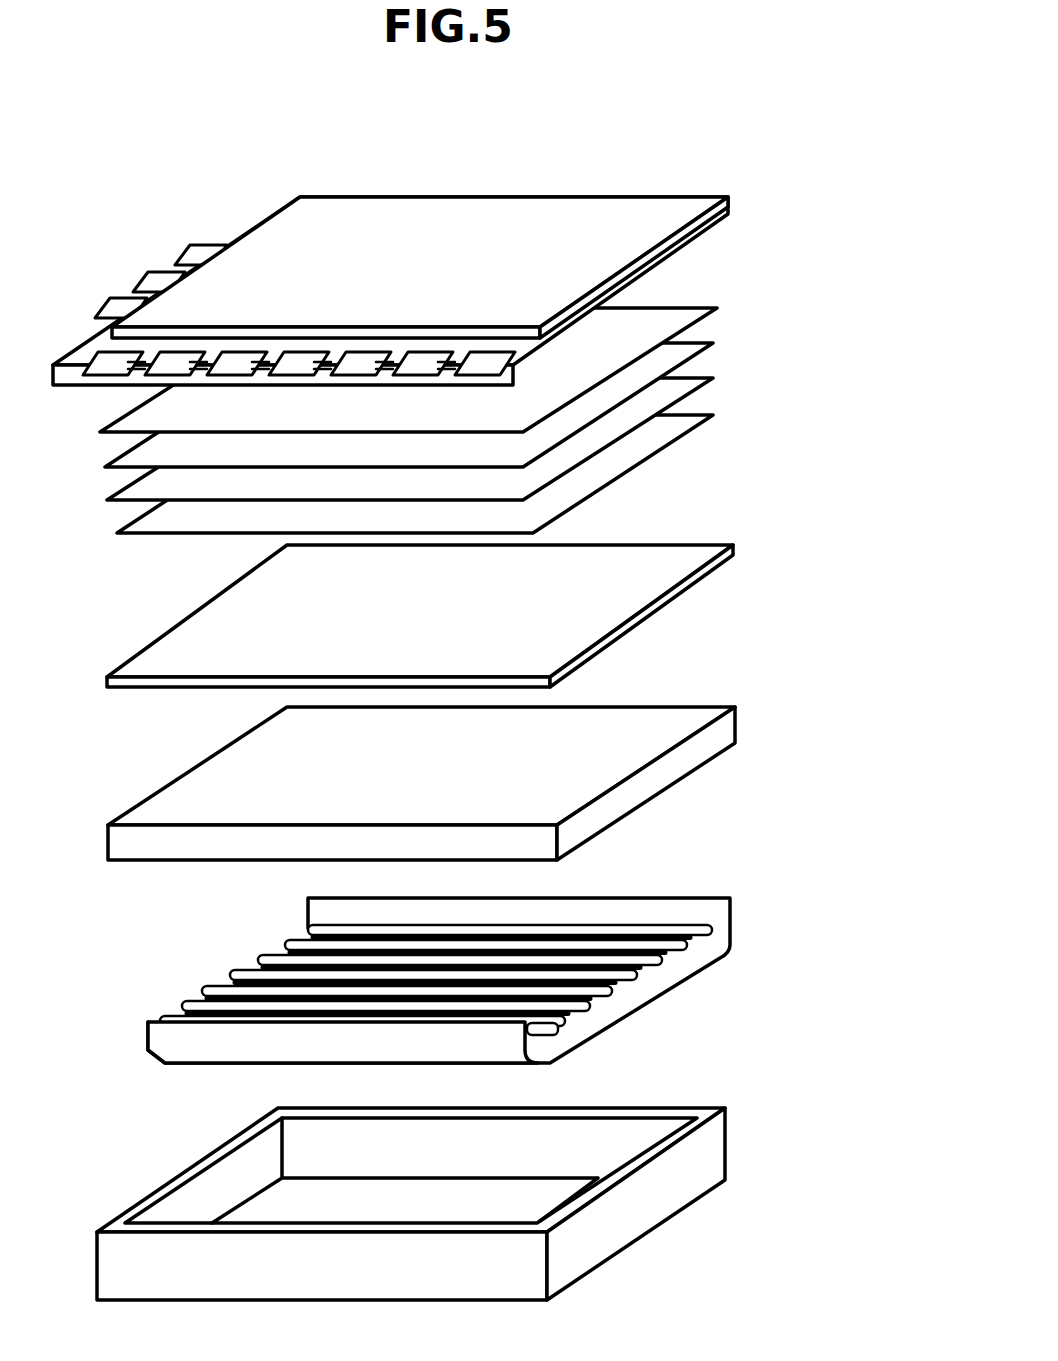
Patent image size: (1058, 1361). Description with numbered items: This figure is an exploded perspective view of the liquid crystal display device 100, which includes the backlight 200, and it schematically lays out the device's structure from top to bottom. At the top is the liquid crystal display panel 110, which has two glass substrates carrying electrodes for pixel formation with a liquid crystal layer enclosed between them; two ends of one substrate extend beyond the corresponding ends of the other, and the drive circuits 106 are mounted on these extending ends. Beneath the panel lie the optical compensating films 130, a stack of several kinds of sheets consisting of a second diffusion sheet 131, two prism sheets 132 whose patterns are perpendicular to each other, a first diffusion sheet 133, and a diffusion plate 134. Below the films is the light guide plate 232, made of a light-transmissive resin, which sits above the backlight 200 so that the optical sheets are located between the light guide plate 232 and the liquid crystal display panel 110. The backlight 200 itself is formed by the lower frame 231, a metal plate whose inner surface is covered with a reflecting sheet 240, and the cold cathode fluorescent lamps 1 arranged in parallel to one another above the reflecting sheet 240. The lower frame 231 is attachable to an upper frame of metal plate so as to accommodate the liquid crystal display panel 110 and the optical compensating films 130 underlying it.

The liquid crystal display device 100 is at (474, 384).
The drive circuits 106 is at (201, 250).
The liquid crystal display panel 110 is at (390, 263).
The optical compensating films 130 is at (497, 497).
The second diffusion sheet 131 is at (458, 370).
The prism sheets 132 is at (687, 367).
The first diffusion sheet 133 is at (647, 463).
The diffusion plate 134 is at (650, 610).
The backlight 200 is at (496, 1003).
The light guide plate 232 is at (660, 815).
The reflecting sheet 240 is at (465, 980).
The cold cathode fluorescent lamps 1 is at (232, 975).
The lower frame 231 is at (648, 1222).